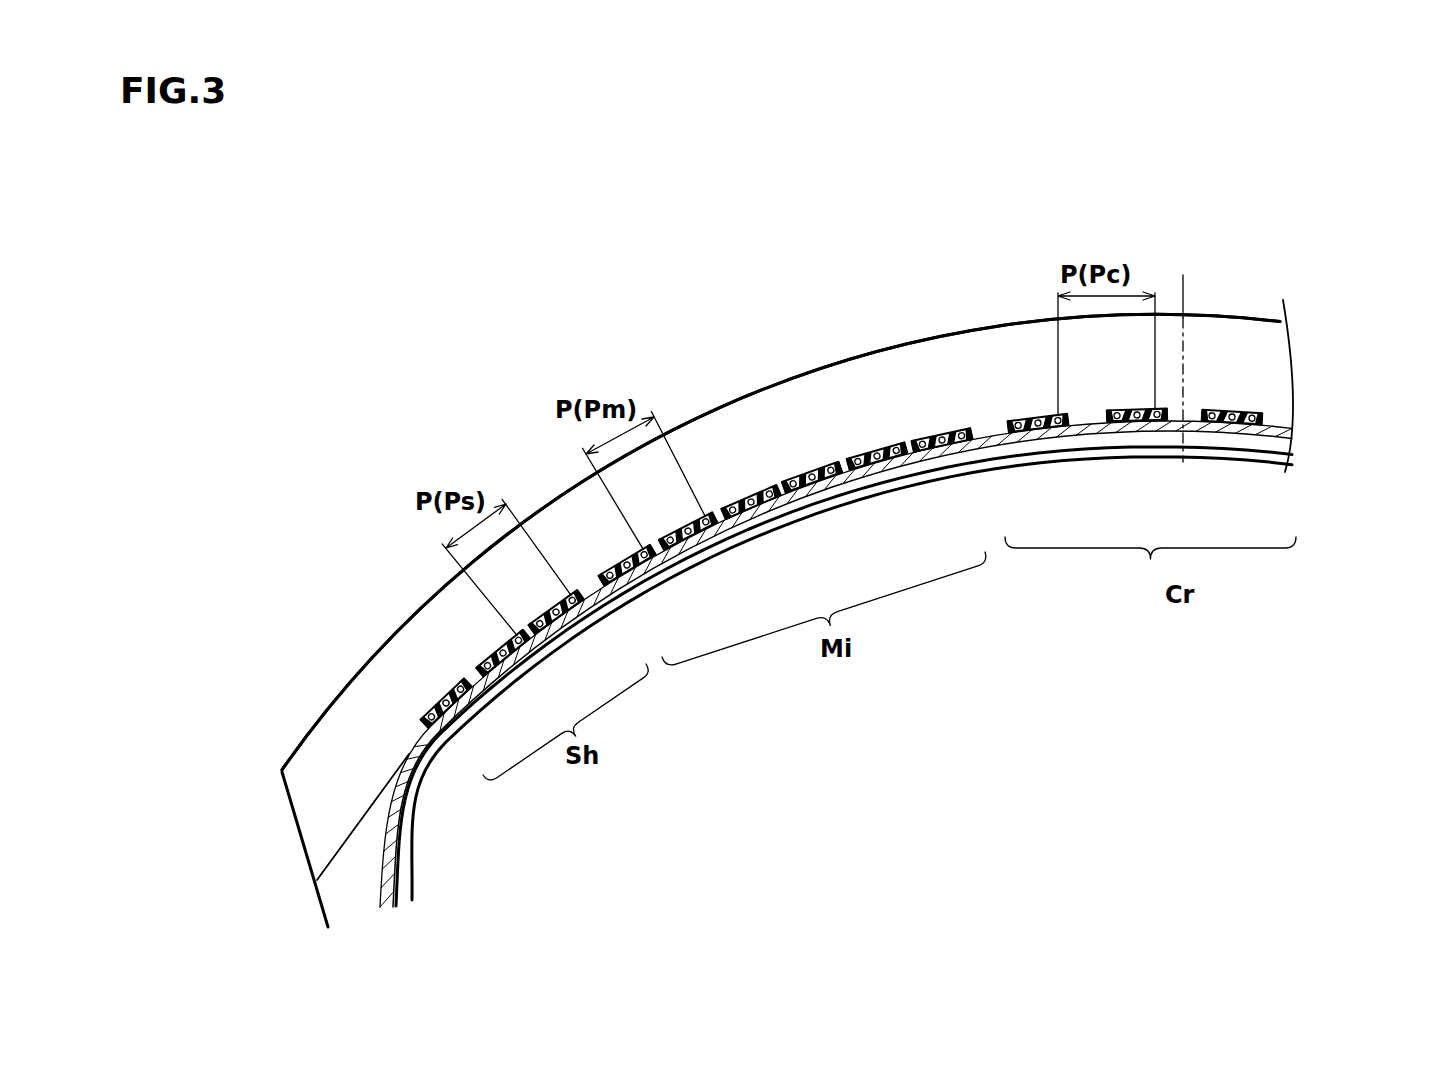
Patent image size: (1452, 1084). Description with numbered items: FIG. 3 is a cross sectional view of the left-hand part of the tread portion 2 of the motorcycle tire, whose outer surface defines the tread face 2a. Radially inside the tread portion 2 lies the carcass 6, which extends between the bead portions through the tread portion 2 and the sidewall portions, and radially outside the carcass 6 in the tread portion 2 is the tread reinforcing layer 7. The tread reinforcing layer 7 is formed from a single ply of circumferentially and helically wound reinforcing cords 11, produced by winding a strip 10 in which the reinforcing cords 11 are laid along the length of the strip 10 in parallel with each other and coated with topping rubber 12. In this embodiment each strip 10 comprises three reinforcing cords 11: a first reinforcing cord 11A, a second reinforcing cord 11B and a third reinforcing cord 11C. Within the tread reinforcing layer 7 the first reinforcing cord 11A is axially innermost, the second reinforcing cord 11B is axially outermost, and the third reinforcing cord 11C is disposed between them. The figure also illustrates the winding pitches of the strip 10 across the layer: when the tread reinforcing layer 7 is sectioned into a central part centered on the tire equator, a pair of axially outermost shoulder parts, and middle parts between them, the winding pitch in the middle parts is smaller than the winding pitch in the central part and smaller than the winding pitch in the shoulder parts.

The tread portion 2 is at (1039, 178).
The tread face 2a is at (963, 333).
The carcass 6 is at (388, 860).
The tread reinforcing layer 7 is at (1174, 392).
The strip 10 is at (798, 486).
The reinforcing cords 11 is at (845, 486).
The first reinforcing cord 11A is at (458, 692).
The second reinforcing cord 11B is at (423, 715).
The third reinforcing cord 11C is at (443, 703).
The topping rubber 12 is at (425, 735).